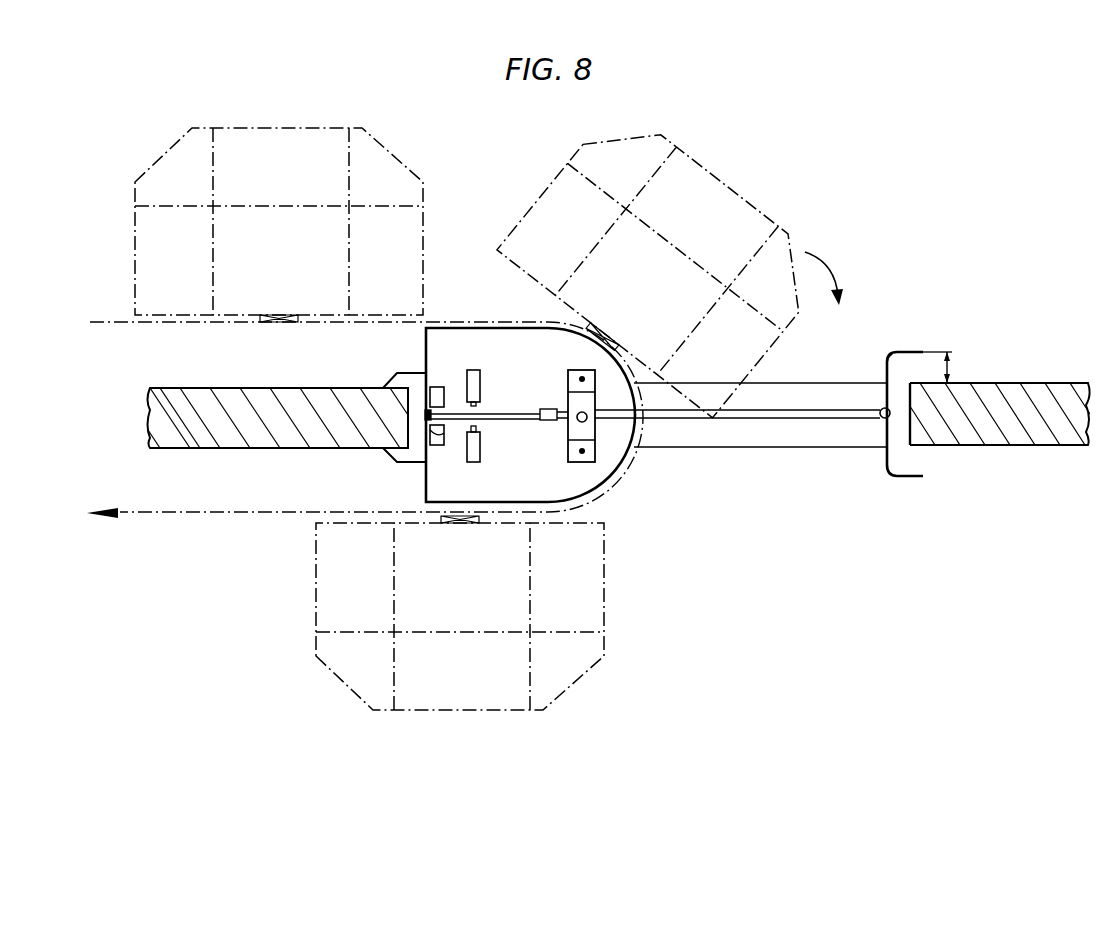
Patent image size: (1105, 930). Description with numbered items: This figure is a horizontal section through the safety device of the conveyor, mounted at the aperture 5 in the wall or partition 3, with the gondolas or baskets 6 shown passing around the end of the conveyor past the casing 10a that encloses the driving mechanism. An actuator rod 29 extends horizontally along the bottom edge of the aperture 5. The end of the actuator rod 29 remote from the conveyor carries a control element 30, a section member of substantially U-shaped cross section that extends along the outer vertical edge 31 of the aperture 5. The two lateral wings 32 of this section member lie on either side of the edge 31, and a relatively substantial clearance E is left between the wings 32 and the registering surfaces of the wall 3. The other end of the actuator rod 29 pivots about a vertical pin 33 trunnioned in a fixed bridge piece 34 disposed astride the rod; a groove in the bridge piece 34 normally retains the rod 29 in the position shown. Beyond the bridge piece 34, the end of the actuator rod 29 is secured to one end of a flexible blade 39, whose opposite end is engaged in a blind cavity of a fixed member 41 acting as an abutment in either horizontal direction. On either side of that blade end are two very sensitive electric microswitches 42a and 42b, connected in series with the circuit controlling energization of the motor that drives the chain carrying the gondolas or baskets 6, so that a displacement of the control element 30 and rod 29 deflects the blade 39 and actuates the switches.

The gondolas or baskets 6 is at (397, 158).
The casing 10a is at (603, 486).
The fixed member 41 is at (420, 448).
The electric microswitch 42a is at (473, 370).
The electric microswitch 42b is at (481, 447).
The flexible blade 39 is at (498, 410).
The fixed bridge piece 34 is at (575, 400).
The vertical pin 33 is at (590, 424).
The aperture 5 is at (745, 436).
The actuator rod 29 is at (815, 420).
The lateral wings 32 is at (906, 348).
The control element 30 is at (887, 364).
The outer vertical edge 31 is at (910, 428).
The wall or partition 3 is at (1042, 383).
The clearance E is at (944, 367).